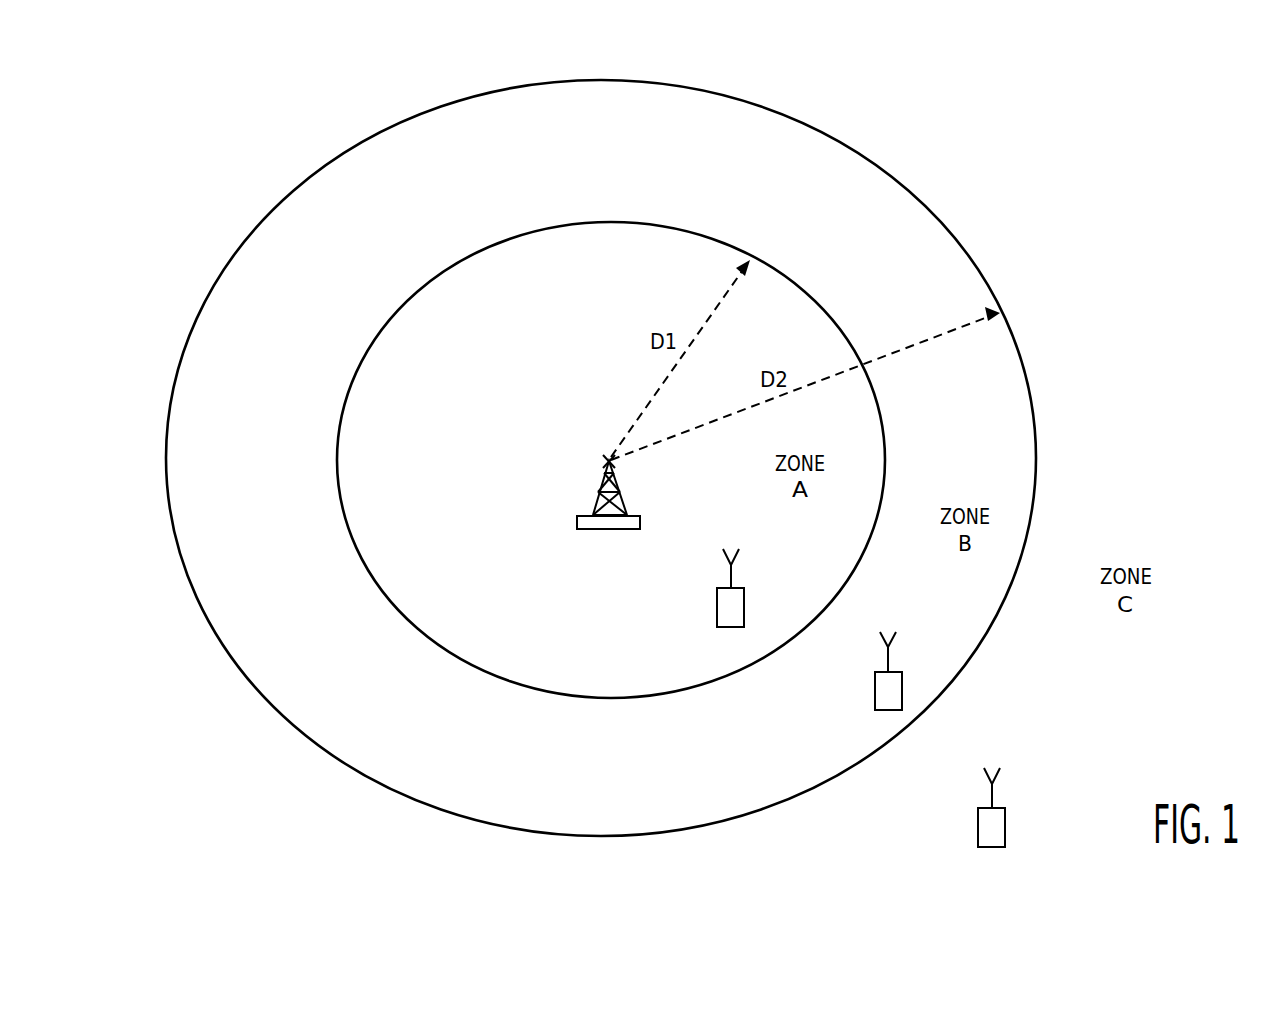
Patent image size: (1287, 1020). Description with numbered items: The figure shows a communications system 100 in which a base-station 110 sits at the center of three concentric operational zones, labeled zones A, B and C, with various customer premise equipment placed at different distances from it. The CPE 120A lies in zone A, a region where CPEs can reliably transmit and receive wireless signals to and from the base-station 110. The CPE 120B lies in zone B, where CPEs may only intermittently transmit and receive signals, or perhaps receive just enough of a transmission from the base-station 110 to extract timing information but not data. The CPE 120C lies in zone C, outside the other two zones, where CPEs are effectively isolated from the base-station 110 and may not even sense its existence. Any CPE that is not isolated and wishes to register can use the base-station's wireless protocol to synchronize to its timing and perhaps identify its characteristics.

The communications system 100 is at (345, 282).
The base-station 110 is at (602, 536).
The customer premise equipment 120A is at (711, 607).
The customer premise equipment 120B is at (869, 688).
The customer premise equipment 120C is at (972, 828).